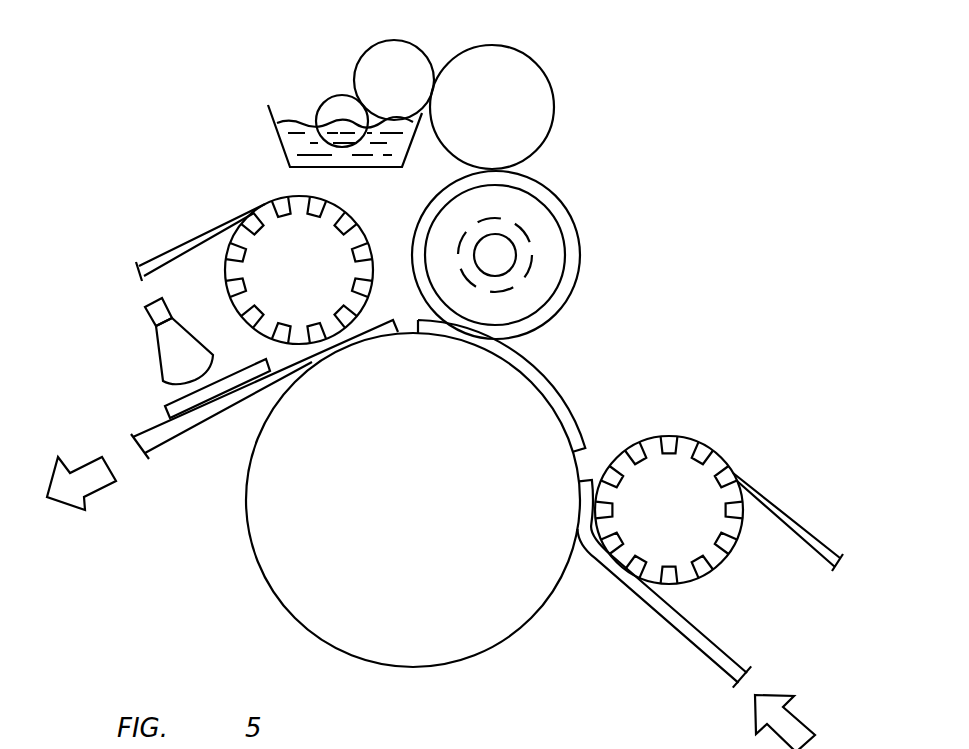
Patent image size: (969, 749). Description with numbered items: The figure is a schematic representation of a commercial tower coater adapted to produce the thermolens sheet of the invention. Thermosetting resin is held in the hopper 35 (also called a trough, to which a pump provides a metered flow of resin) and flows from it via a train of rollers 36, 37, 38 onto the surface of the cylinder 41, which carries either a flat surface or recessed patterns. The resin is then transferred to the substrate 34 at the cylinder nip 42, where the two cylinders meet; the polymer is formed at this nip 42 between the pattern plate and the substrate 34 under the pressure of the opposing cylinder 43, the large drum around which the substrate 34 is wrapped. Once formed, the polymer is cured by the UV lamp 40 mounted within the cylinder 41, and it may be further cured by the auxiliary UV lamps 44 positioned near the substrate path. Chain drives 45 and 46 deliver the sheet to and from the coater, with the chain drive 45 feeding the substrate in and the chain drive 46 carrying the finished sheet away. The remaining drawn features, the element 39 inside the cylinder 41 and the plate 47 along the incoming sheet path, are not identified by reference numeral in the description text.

The substrate 34 is at (700, 625).
The hopper 35 is at (295, 128).
The roller 36 is at (337, 107).
The roller 37 is at (393, 60).
The roller 38 is at (515, 92).
The heating element 39 is at (512, 228).
The UV lamp 40 is at (506, 256).
The cylinder 41 is at (584, 280).
The cylinder nip 42 is at (472, 333).
The cylinder 43 is at (268, 508).
The auxiliary UV lamp 44 is at (153, 356).
The chain drive 45 is at (275, 255).
The chain drive 46 is at (705, 495).
The plate 47 is at (170, 410).